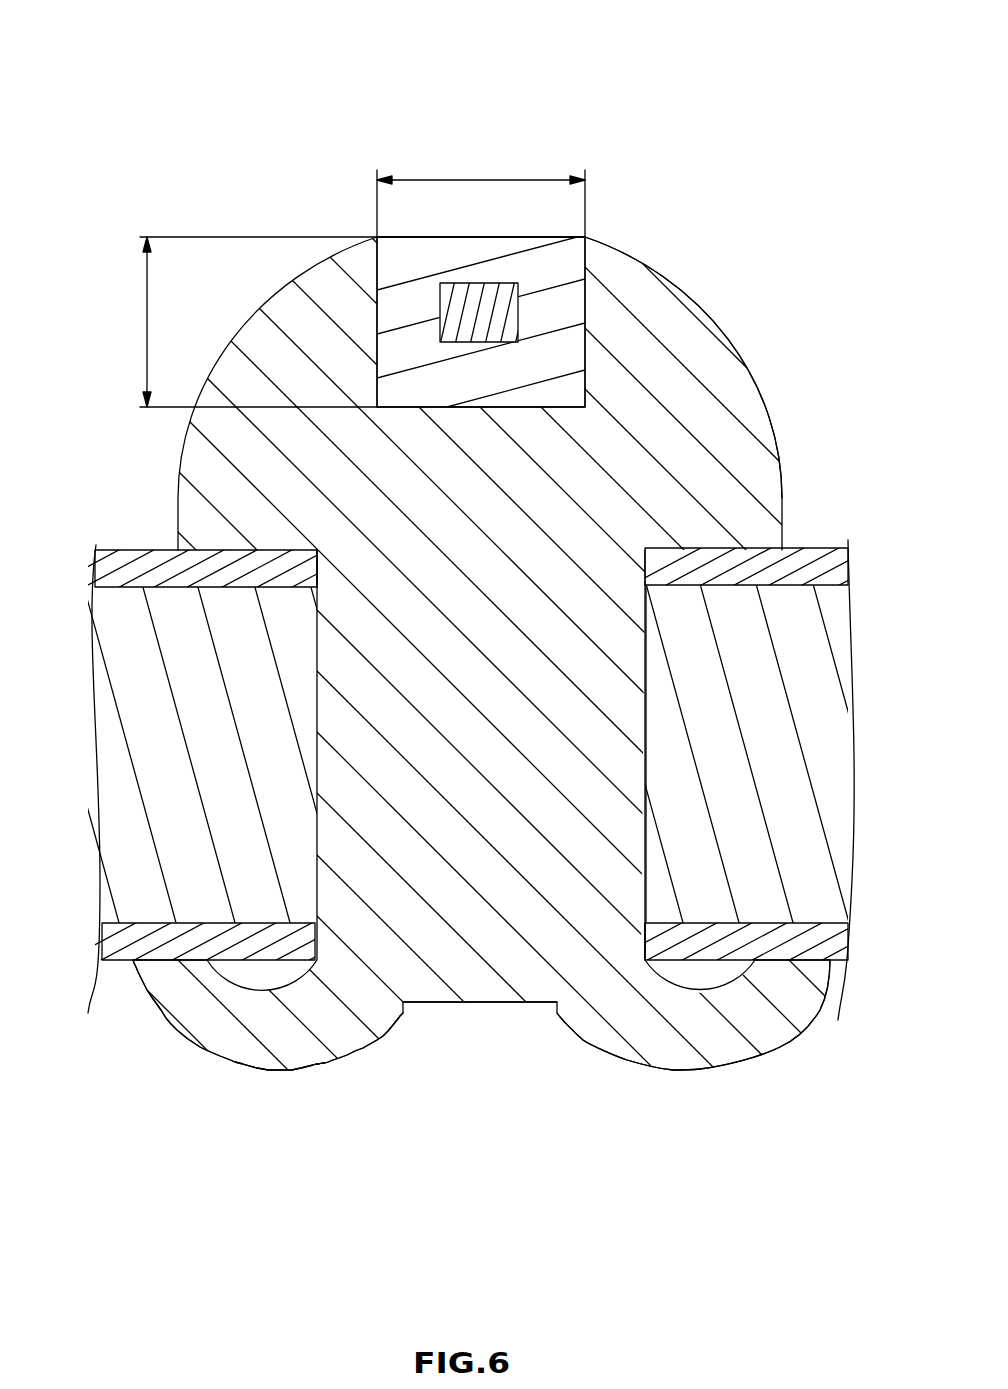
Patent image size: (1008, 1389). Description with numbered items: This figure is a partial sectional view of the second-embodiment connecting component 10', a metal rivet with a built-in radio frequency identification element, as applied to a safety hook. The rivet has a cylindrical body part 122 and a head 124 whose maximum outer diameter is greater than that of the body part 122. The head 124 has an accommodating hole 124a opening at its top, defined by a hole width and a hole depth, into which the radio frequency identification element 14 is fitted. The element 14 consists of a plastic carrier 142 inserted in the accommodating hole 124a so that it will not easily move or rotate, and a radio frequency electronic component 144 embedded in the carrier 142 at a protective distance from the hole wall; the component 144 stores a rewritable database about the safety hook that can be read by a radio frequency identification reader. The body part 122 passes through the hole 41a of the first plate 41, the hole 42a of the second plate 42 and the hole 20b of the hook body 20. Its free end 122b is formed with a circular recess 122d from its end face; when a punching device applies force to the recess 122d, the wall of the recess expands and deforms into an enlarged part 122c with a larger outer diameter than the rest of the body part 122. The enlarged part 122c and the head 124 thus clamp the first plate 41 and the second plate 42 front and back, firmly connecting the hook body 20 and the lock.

The connecting component 10' is at (504, 630).
The head 124 is at (747, 482).
The accommodating hole 124a is at (587, 253).
The radio frequency identification element 14 is at (847, 303).
The plastic carrier 142 is at (547, 365).
The radio frequency electronic component 144 is at (502, 320).
The body part 122 is at (445, 768).
The free end 122b is at (572, 945).
The enlarged part 122c is at (208, 1023).
The recess 122d is at (500, 1003).
The first plate 41 is at (113, 567).
The hole 41a is at (300, 548).
The second plate 42 is at (137, 936).
The hole 42a is at (647, 948).
The hook body 20 is at (140, 673).
The hole 20b is at (647, 782).